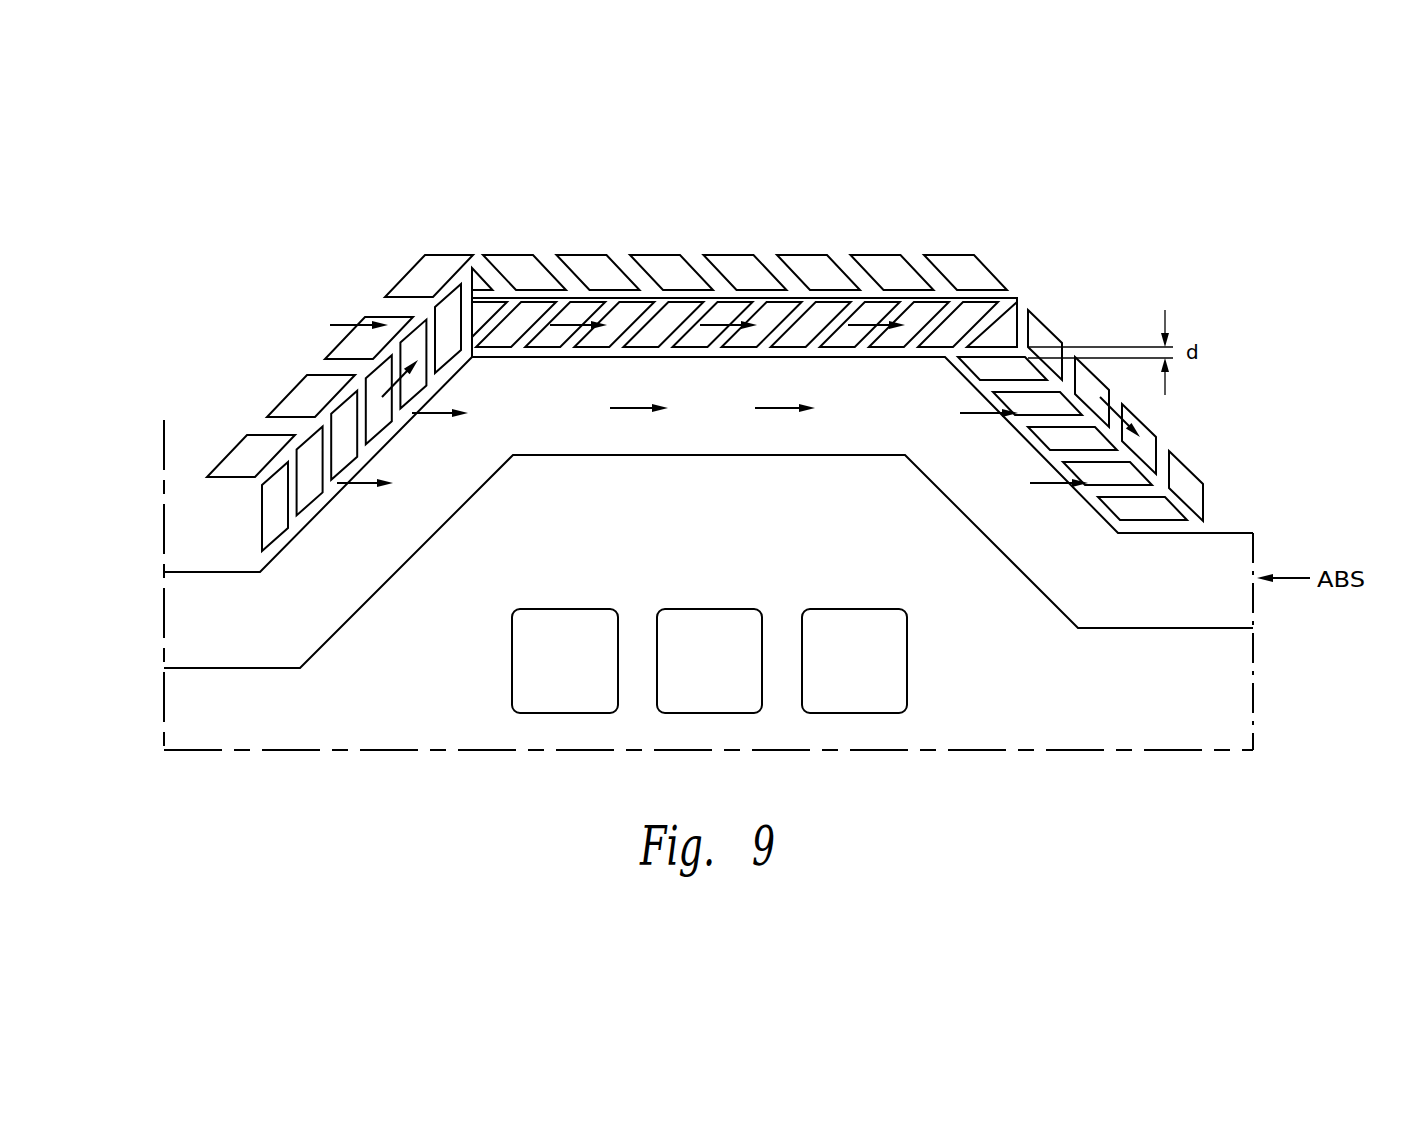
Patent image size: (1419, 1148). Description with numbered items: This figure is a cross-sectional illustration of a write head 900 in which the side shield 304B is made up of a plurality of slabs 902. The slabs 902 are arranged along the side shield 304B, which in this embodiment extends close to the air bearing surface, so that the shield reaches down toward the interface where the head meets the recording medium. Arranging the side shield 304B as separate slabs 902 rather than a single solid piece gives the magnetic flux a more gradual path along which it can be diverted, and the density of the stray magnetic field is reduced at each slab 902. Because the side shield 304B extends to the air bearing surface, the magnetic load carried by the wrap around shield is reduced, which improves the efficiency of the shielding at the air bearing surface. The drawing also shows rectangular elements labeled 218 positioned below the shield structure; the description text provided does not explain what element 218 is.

The write head 900 is at (270, 145).
The side shield 304B is at (838, 211).
The slabs 902 is at (973, 307).
The coils 218 is at (707, 617).